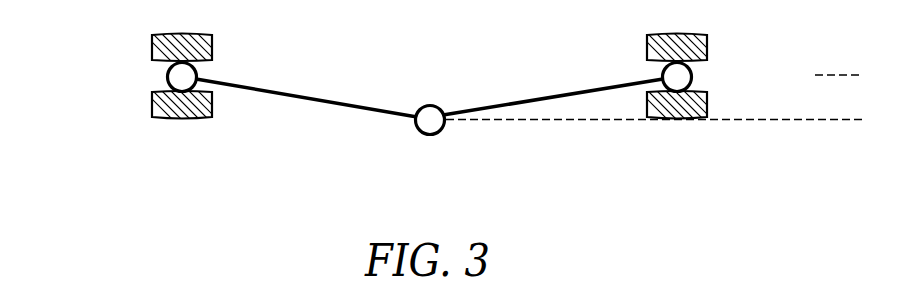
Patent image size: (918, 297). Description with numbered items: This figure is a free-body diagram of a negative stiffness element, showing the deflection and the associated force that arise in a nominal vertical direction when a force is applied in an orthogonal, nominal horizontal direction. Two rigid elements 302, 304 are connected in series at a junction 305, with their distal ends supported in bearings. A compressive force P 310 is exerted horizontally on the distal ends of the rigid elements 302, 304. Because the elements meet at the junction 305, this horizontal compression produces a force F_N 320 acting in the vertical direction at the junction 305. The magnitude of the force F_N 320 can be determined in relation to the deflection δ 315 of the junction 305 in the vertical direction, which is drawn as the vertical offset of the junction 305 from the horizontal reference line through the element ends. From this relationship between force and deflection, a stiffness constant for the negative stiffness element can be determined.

The rigid element 302 is at (303, 97).
The rigid element 304 is at (555, 97).
The junction 305 is at (446, 110).
The compressive force P 310 is at (167, 76).
The deflection δ 315 is at (843, 48).
The force F_N 320 is at (430, 141).